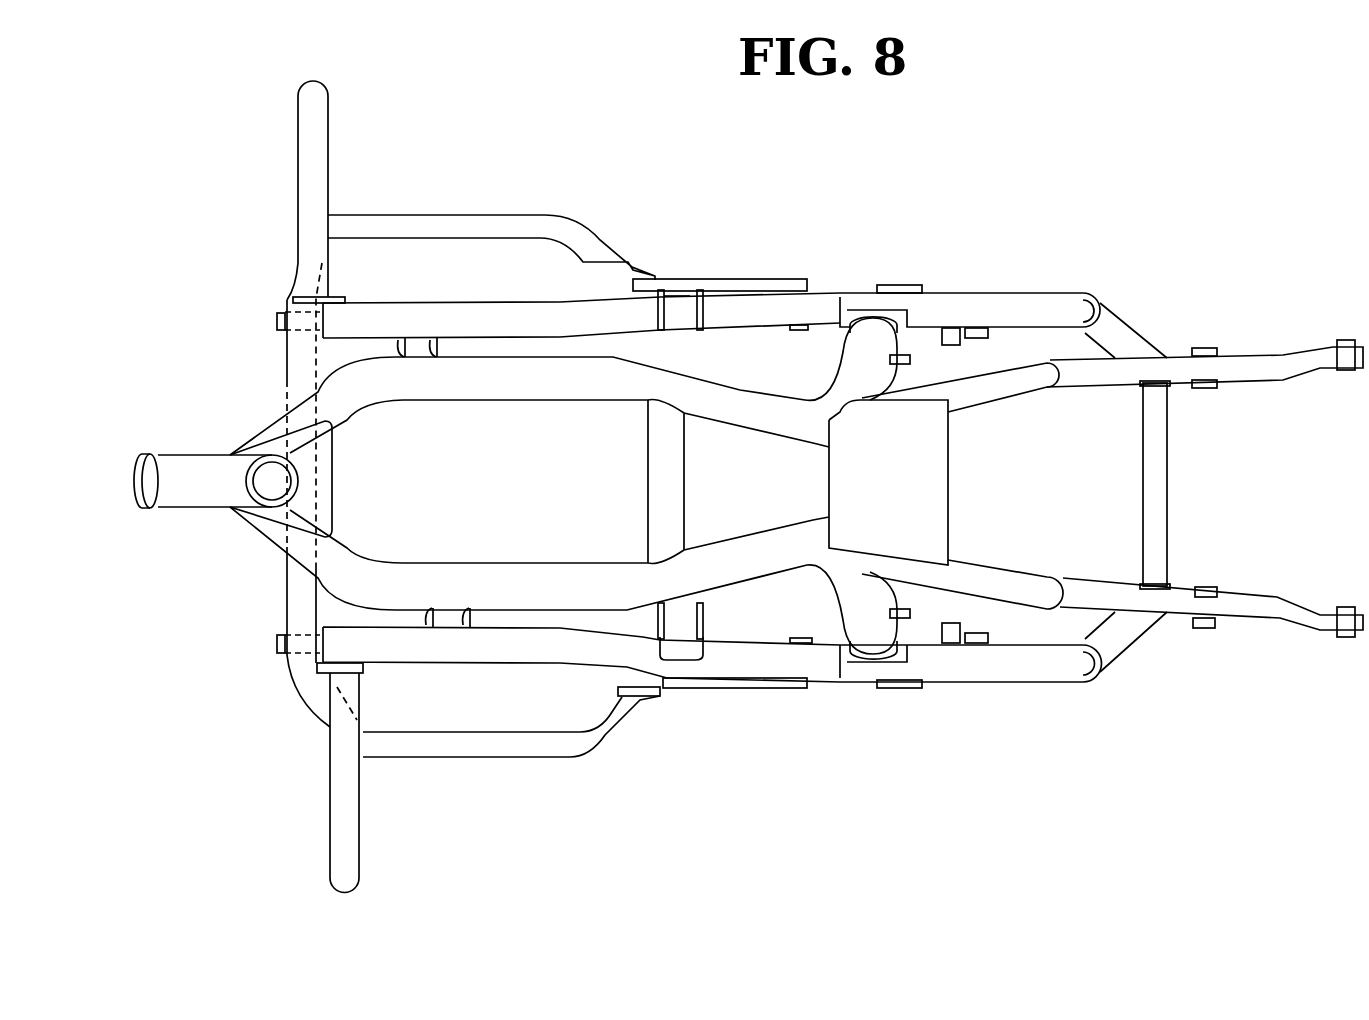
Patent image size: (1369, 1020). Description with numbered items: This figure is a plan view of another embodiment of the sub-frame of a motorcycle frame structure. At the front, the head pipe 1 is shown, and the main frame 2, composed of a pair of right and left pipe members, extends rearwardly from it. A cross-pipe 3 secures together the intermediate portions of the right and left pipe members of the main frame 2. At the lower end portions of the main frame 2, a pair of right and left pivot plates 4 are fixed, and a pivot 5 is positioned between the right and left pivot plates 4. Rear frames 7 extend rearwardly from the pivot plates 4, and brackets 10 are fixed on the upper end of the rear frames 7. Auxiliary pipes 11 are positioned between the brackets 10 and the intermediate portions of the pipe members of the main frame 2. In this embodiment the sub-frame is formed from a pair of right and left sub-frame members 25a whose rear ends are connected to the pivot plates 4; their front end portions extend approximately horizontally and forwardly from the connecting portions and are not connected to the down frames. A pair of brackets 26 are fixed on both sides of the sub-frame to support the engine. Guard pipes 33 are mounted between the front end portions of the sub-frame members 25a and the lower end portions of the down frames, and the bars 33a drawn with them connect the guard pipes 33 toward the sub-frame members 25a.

The head pipe 1 is at (200, 470).
The main frame 2 is at (540, 557).
The cross-pipe 3 is at (665, 483).
The pivot plates 4 is at (990, 304).
The pivot 5 is at (895, 375).
The rear frames 7 is at (1130, 336).
The brackets 10 is at (1229, 367).
The auxiliary pipes 11 is at (1005, 388).
The sub-frame members 25a is at (520, 318).
The brackets 26 is at (415, 352).
The guard pipes 33 is at (308, 232).
The bumper bar 33a is at (439, 221).